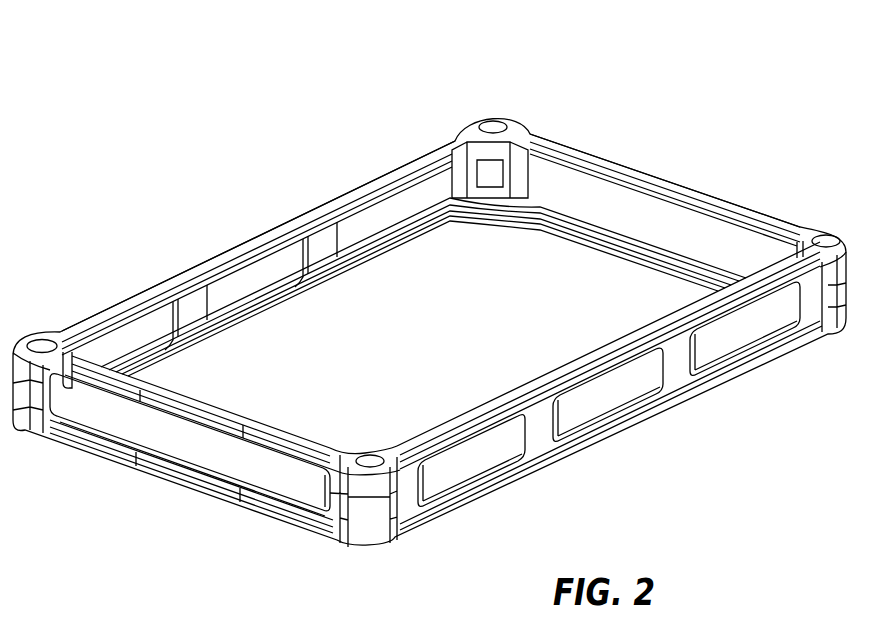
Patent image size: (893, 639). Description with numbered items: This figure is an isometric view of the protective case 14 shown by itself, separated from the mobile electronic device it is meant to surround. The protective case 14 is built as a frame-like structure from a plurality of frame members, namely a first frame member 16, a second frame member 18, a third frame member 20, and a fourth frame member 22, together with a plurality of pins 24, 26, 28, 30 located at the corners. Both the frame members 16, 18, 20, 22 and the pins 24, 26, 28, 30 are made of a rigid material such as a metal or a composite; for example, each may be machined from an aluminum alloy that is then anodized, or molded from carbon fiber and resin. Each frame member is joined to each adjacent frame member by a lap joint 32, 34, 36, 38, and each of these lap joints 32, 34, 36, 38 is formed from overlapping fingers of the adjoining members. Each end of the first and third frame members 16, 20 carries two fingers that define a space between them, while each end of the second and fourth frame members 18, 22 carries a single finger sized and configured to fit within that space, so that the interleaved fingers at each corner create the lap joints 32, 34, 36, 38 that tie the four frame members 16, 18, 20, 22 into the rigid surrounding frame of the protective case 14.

The protective case 14 is at (738, 116).
The first frame member 16 is at (265, 222).
The second frame member 18 is at (206, 507).
The third frame member 20 is at (627, 434).
The fourth frame member 22 is at (645, 170).
The pin 24 is at (44, 340).
The pin 26 is at (830, 236).
The pin 28 is at (495, 122).
The pin 30 is at (372, 457).
The lap joint 32 is at (22, 442).
The lap joint 34 is at (836, 347).
The lap joint 36 is at (494, 230).
The lap joint 38 is at (362, 558).